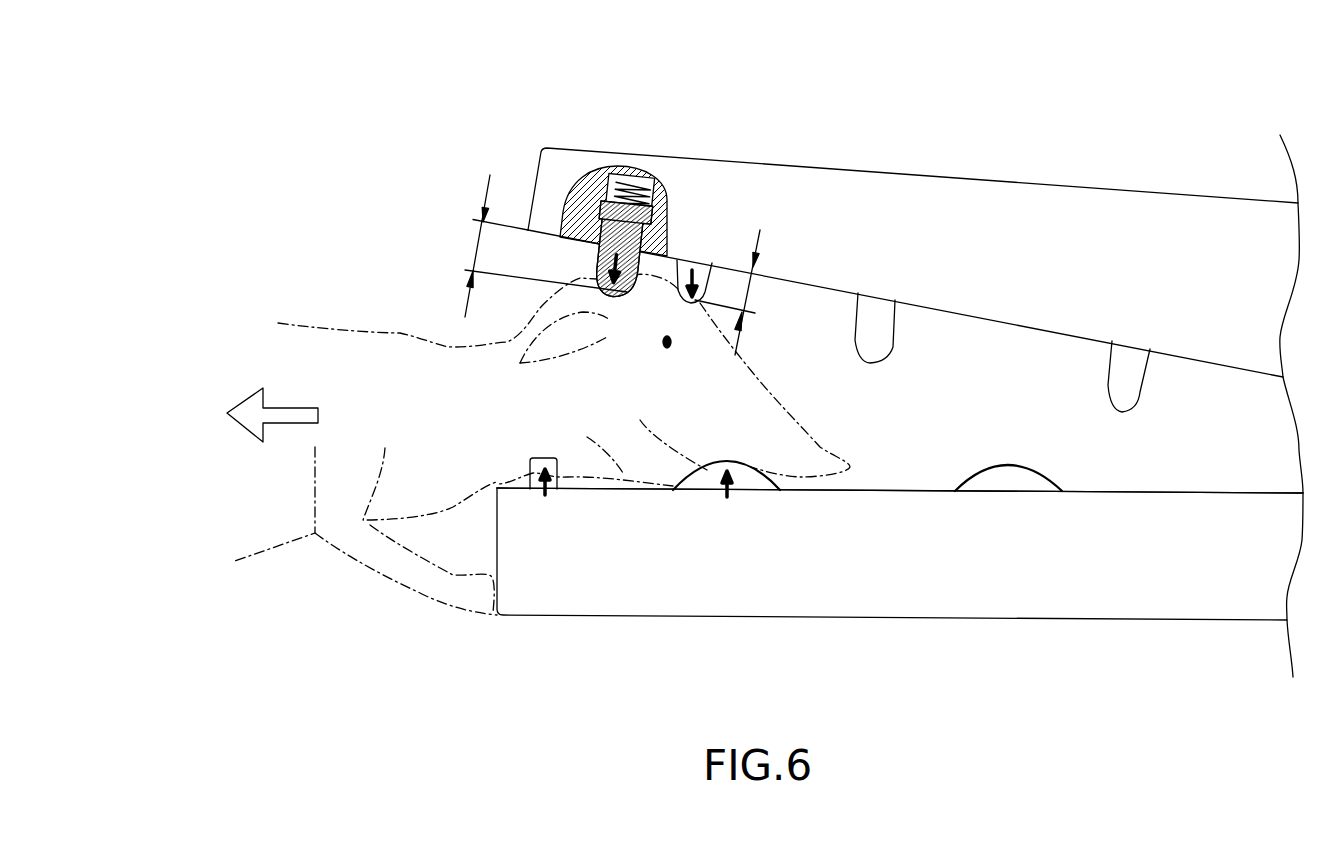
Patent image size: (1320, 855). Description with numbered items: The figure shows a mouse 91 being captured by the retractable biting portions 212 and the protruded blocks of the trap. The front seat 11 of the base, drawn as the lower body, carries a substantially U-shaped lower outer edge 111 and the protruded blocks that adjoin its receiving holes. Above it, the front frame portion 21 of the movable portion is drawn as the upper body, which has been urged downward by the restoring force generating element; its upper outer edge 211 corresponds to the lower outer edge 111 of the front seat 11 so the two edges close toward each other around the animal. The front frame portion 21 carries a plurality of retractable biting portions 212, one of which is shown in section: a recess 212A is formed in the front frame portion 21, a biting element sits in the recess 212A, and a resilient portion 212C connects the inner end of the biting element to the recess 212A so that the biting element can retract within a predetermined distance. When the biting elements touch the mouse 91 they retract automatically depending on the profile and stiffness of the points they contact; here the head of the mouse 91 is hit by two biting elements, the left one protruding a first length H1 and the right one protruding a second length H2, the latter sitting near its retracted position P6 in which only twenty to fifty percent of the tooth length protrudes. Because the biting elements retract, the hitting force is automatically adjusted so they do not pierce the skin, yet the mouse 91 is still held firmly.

The front seat 11 is at (540, 570).
The lower outer edge 111 is at (883, 483).
The front frame portion 21 is at (902, 187).
The upper outer edge 211 is at (1033, 330).
The retractable biting portions 212 is at (621, 154).
The recess 212A is at (668, 174).
The resilient portion 212C is at (607, 170).
The mouse 91 is at (340, 327).
The retracted position P6 is at (712, 286).
The first length H1 is at (529, 246).
The second length H2 is at (745, 292).